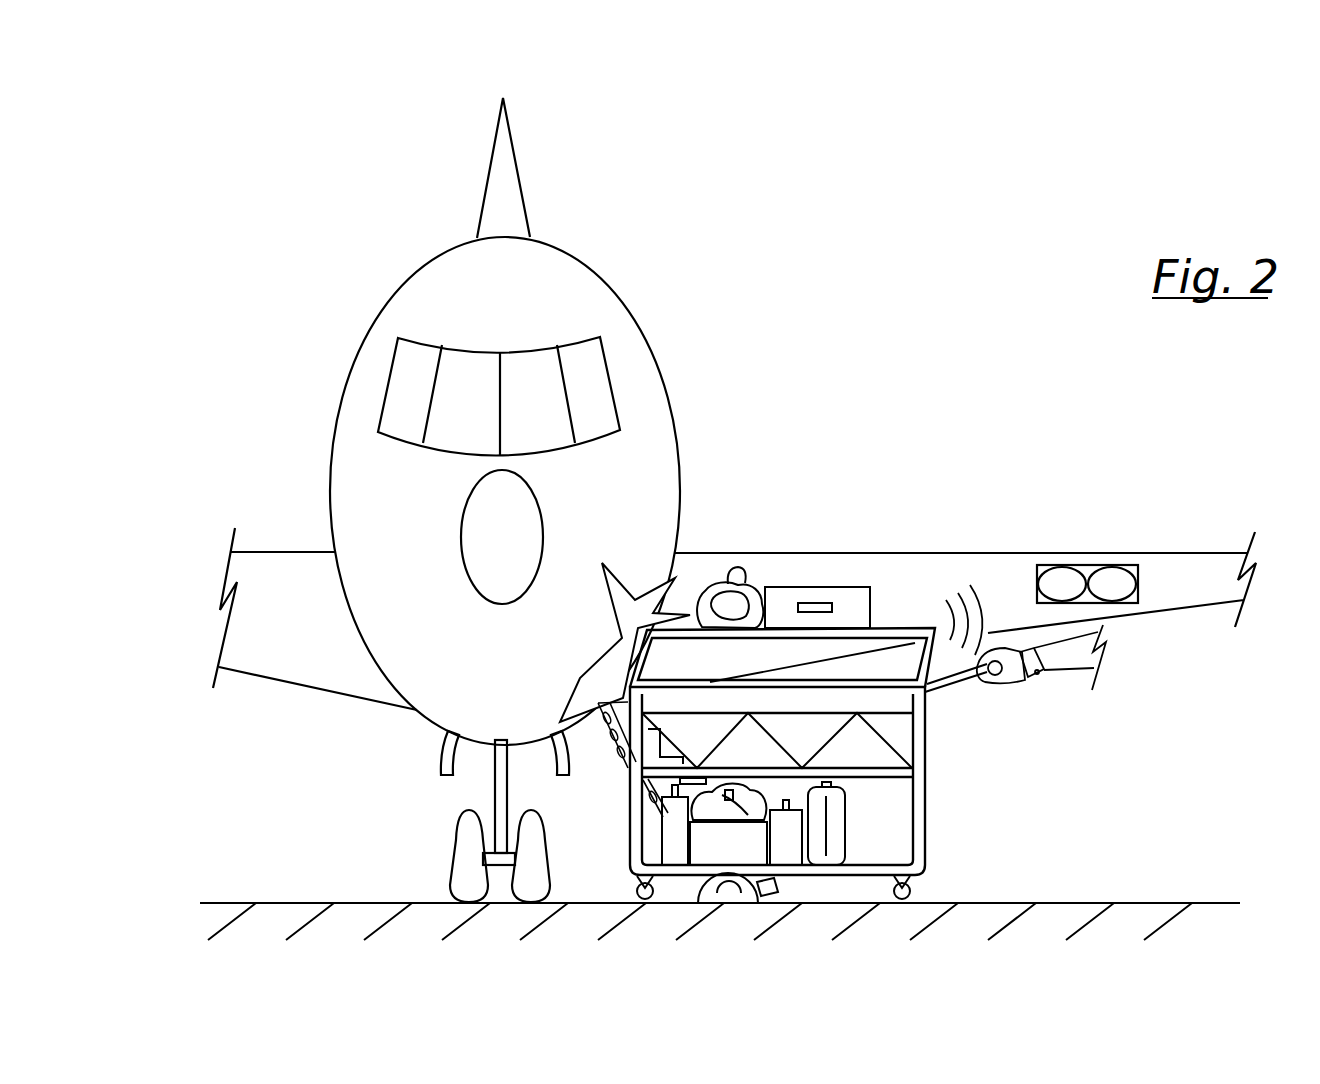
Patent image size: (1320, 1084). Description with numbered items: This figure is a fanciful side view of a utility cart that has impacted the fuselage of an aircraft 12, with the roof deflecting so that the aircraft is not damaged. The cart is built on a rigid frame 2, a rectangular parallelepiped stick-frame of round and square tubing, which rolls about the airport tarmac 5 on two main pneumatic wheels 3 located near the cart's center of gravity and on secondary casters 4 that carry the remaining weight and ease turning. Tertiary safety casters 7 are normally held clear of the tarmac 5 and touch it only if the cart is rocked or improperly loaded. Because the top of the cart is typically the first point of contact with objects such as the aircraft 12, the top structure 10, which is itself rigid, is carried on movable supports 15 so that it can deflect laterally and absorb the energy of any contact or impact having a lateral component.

The rigid frame 2 is at (915, 775).
The main pneumatic wheels 3 is at (742, 890).
The secondary casters 4 is at (912, 892).
The tarmac 5 is at (1150, 903).
The tertiary safety casters 7 is at (640, 884).
The top structure 10 is at (813, 632).
The aircraft 12 is at (653, 488).
The movable supports 15 is at (643, 654).